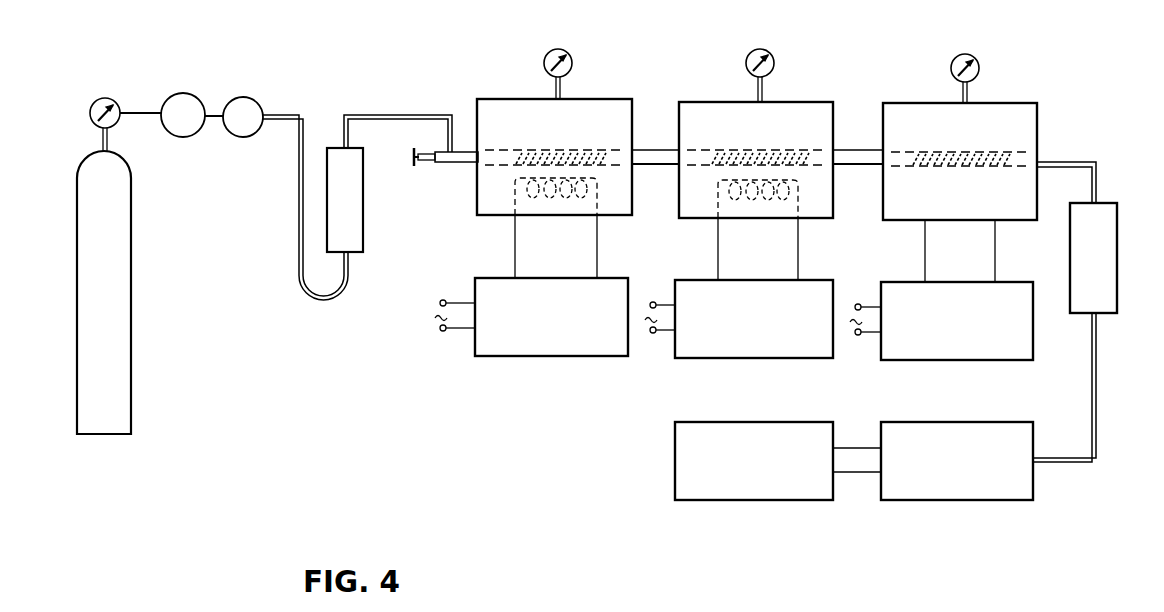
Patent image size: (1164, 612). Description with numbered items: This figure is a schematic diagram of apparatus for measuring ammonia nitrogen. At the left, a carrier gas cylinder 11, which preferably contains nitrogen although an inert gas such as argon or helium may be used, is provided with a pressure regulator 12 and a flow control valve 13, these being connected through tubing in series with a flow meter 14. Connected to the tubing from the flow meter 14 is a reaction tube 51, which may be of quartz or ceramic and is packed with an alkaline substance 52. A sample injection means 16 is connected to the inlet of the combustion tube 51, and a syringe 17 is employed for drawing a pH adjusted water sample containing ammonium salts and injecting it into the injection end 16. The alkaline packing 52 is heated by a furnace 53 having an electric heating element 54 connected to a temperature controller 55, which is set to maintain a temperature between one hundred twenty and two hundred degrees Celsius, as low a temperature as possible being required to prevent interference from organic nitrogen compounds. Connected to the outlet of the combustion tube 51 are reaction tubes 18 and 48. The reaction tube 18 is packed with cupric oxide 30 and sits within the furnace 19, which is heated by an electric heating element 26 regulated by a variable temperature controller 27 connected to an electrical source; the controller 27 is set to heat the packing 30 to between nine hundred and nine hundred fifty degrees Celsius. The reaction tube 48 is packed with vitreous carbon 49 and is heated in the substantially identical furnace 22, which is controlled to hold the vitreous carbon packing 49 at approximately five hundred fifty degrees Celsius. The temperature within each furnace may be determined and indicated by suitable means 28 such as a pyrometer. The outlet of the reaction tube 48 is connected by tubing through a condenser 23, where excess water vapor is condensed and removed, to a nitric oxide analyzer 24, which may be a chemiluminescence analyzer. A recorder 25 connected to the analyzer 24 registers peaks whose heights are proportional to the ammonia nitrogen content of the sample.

The carrier gas cylinder 11 is at (131, 280).
The pressure regulator 12 is at (176, 137).
The flow control valve 13 is at (244, 137).
The flow meter 14 is at (363, 234).
The sample injection means 16 is at (465, 165).
The syringe 17 is at (432, 163).
The reaction tube 18 is at (690, 150).
The furnace 19 is at (797, 102).
The furnace 22 is at (1005, 103).
The condenser 23 is at (1117, 268).
The nitric oxide analyzer 24 is at (985, 422).
The recorder 25 is at (770, 422).
The electric heating element 26 is at (798, 197).
The variable temperature controller 27 is at (745, 280).
The temperature indicating means 28 is at (570, 57).
The cupric oxide 30 is at (805, 158).
The reaction tube 48 is at (893, 152).
The vitreous carbon 49 is at (1010, 160).
The reaction tube 51 is at (487, 148).
The alkaline substance 52 is at (600, 156).
The furnace 53 is at (595, 99).
The electric heating element 54 is at (515, 196).
The temperature controller 55 is at (597, 278).